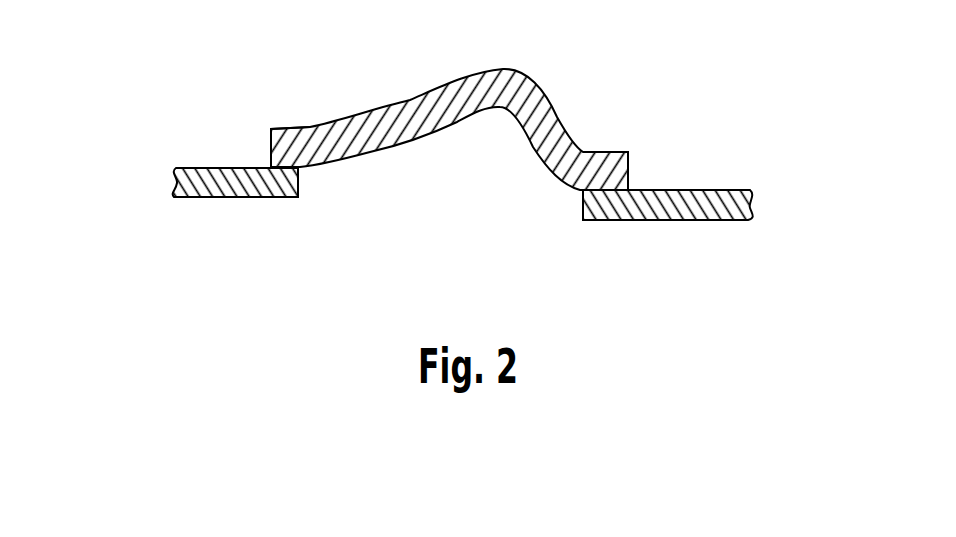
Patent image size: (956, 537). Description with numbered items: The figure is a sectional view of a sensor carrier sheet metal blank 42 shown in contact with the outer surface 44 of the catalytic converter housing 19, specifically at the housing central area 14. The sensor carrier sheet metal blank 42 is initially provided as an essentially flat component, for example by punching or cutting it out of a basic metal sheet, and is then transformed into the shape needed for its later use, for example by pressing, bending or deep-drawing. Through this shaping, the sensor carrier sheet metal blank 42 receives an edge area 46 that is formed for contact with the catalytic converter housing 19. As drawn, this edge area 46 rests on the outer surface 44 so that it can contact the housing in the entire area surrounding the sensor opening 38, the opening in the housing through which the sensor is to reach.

The housing central area 14 is at (213, 178).
The catalytic converter housing 19 is at (737, 191).
The sensor opening 38 is at (300, 172).
The sensor carrier sheet metal blank 42 is at (556, 116).
The outer surface 44 is at (229, 149).
The edge area 46 is at (275, 128).